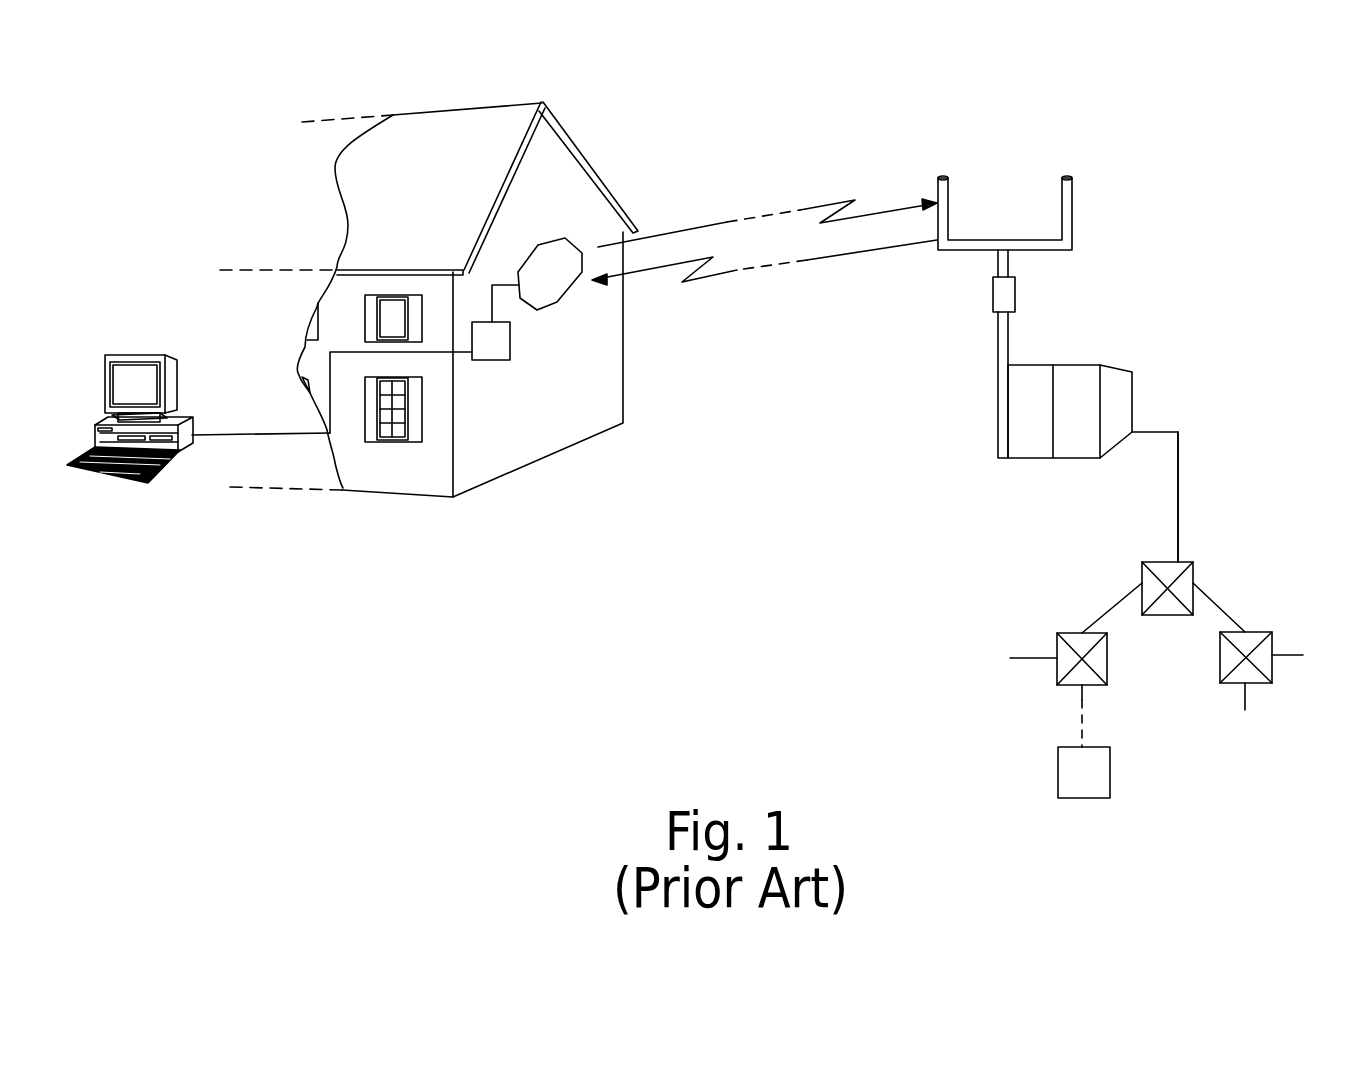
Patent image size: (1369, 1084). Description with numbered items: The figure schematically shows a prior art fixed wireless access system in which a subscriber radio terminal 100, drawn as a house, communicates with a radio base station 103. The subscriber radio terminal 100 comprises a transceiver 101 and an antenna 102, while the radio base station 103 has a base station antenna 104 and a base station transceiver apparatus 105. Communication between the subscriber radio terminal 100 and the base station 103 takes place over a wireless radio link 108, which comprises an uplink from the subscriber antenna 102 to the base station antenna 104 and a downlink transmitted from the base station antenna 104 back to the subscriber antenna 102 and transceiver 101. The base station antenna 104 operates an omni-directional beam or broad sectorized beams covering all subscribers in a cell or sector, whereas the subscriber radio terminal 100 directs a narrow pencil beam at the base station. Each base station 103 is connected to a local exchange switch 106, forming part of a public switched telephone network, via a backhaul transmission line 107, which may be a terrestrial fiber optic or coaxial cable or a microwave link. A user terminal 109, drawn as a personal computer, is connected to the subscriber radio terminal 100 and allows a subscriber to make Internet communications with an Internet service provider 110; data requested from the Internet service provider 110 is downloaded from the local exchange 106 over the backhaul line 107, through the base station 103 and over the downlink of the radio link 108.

The subscriber radio terminal 100 is at (610, 404).
The transceiver 101 is at (487, 360).
The antenna 102 is at (545, 240).
The radio base station 103 is at (962, 478).
The base station antenna 104 is at (1072, 210).
The base station transceiver apparatus 105 is at (1027, 377).
The local exchange switch 106 is at (1193, 580).
The backhaul transmission line 107 is at (1178, 503).
The wireless radio link 108 is at (750, 218).
The user terminal 109 is at (172, 402).
The Internet service provider 110 is at (1110, 770).